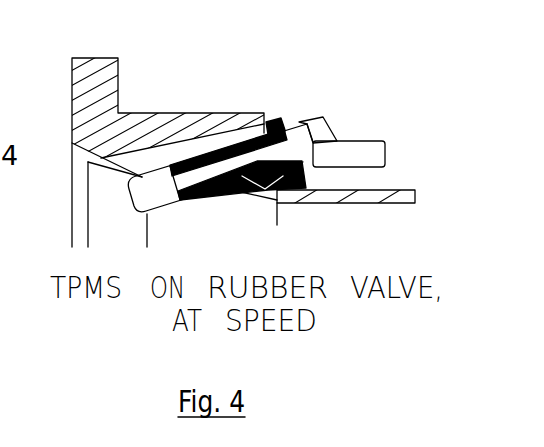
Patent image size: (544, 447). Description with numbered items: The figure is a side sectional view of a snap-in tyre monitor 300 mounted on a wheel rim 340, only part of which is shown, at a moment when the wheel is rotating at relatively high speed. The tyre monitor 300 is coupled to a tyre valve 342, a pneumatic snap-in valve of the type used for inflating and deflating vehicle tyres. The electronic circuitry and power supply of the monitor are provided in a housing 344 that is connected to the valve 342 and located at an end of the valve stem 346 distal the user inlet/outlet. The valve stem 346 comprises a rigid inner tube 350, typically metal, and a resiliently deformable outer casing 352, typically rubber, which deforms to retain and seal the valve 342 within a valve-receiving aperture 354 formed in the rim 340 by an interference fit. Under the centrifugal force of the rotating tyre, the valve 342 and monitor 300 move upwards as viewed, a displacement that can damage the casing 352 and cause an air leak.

The tyre monitor 300 is at (299, 143).
The wheel rim 340 is at (82, 161).
The tyre valve 342 is at (167, 200).
The housing 344 is at (377, 158).
The valve stem 346 is at (213, 150).
The rigid inner tube 350 is at (284, 146).
The outer casing 352 is at (229, 186).
The valve-receiving aperture 354 is at (194, 158).